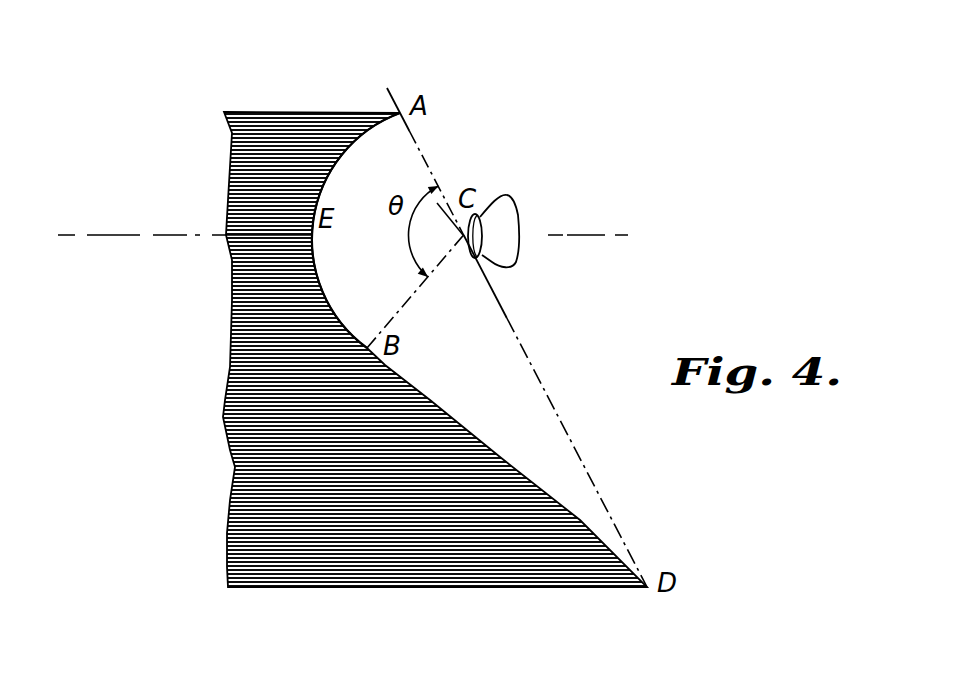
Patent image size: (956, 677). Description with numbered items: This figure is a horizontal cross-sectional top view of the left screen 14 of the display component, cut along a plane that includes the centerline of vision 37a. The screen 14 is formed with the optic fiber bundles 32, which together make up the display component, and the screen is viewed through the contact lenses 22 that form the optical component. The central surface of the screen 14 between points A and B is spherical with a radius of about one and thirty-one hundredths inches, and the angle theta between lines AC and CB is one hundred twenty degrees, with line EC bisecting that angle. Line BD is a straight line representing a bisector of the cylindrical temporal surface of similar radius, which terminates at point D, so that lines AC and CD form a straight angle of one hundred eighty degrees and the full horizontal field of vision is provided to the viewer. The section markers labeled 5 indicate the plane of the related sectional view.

The screen 14 is at (431, 400).
The optic fiber bundles 32 is at (297, 112).
The centerline of vision 37a is at (173, 234).
The contact lenses 22 is at (468, 258).
The section line 5- 5 is at (109, 262).